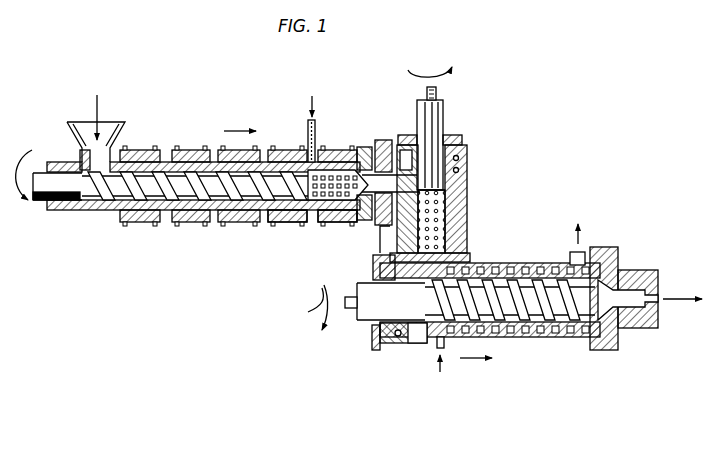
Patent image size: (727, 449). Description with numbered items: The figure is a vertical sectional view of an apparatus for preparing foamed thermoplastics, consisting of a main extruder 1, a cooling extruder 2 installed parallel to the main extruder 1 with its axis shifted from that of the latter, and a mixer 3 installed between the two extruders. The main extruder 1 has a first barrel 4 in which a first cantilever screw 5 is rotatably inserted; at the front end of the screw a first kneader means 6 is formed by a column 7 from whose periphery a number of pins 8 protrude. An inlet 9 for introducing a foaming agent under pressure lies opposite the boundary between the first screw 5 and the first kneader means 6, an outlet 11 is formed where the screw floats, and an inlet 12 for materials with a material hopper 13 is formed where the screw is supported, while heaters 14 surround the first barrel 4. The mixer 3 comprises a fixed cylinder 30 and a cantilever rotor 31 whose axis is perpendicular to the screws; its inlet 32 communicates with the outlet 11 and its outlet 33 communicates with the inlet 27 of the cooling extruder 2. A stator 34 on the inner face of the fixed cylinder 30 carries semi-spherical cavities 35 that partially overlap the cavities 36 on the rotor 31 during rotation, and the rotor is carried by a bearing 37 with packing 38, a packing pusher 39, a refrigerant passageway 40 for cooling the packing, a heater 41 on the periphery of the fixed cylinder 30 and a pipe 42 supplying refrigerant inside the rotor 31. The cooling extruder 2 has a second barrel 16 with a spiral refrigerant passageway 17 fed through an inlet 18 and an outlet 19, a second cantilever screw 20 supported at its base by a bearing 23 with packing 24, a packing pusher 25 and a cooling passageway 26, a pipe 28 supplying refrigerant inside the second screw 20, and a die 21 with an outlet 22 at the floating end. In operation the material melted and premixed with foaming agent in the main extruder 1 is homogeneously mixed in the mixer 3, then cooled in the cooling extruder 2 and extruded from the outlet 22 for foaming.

The main extruder 1 is at (146, 244).
The cooling extruder 2 is at (538, 354).
The mixer 3 is at (504, 166).
The first barrel 4 is at (104, 208).
The first cantilever screw 5 is at (190, 212).
The first kneader means 6 is at (360, 222).
The column 7 is at (296, 222).
The pins 8 is at (332, 172).
The inlet 9 is at (308, 134).
The outlet 11 is at (364, 147).
The inlet 12 is at (84, 158).
The material hopper 13 is at (112, 132).
The heaters 14 is at (210, 148).
The second barrel 16 is at (552, 270).
The spiral refrigerant passageway 17 is at (486, 266).
The inlet 18 is at (438, 348).
The outlet 19 is at (574, 254).
The second cantilever screw 20 is at (568, 340).
The die 21 is at (642, 330).
The outlet 22 is at (658, 294).
The bearing 23 is at (416, 340).
The packing 24 is at (392, 340).
The packing pusher 25 is at (374, 342).
The passageway 26 is at (400, 340).
The inlet 27 is at (428, 294).
The pipe 28 is at (360, 308).
The fixed cylinder 30 is at (468, 206).
The cantilever rotor 31 is at (446, 110).
The inlet 32 is at (384, 144).
The outlet 33 is at (380, 268).
The stator 34 is at (458, 220).
The cavities 35 is at (398, 216).
The cavities 36 is at (410, 162).
The bearing 37 is at (462, 182).
The packing 38 is at (462, 156).
The packing pusher 39 is at (456, 140).
The passageway 40 is at (462, 168).
The heater 41 is at (488, 244).
The pipe 42 is at (438, 92).